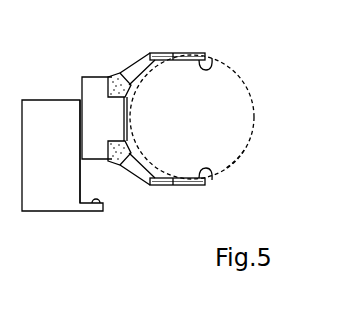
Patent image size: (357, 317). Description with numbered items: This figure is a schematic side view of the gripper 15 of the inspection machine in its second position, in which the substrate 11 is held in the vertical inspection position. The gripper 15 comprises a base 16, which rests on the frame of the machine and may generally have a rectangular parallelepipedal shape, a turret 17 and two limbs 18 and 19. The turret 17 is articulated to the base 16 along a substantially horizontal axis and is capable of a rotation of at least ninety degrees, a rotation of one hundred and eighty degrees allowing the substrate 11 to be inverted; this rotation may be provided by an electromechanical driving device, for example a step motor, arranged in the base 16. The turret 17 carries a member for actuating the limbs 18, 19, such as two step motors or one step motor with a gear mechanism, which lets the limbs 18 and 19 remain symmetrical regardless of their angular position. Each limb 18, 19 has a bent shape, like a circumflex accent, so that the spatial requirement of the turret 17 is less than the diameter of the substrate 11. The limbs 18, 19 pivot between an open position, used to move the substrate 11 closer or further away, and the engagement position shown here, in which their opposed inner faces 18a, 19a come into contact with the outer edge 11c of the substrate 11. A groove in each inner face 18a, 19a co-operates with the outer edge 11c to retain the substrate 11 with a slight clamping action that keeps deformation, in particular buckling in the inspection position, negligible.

The substrate 11 is at (236, 76).
The outer edge 11c is at (243, 153).
The gripper 15 is at (185, 210).
The base 16 is at (58, 152).
The turret 17 is at (112, 126).
The limb 18 is at (135, 65).
The inner face 18a is at (210, 57).
The limb 19 is at (130, 173).
The inner face 19a is at (211, 186).